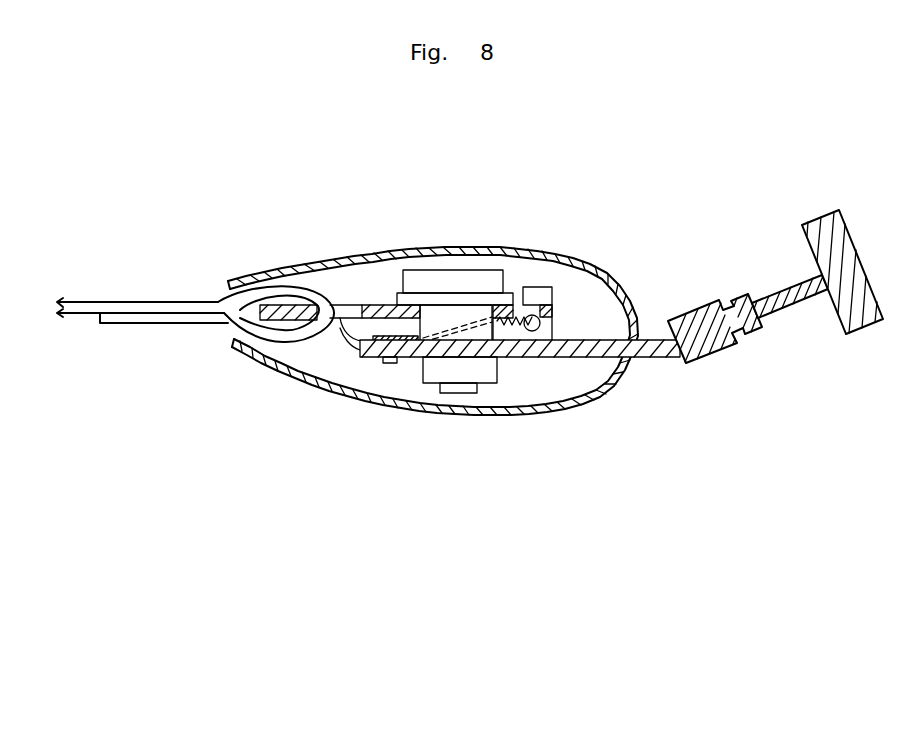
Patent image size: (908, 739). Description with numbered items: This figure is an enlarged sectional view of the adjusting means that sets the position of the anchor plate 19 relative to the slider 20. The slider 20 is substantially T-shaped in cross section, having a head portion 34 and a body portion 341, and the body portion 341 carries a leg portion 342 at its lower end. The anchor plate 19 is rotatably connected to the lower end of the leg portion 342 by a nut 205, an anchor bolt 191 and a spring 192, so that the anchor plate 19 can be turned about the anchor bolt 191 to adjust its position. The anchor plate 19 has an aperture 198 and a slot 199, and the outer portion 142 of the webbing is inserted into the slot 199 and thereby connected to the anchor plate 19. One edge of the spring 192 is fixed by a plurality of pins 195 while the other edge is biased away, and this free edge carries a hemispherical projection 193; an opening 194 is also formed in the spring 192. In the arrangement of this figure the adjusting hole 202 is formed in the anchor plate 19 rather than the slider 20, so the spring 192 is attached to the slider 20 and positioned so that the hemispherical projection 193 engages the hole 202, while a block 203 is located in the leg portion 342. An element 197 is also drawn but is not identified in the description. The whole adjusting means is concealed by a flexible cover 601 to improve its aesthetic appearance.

The outer portion of the webbing 142 is at (138, 302).
The flexible cover 601 is at (400, 408).
The aperture 198 is at (420, 295).
The slot 199 is at (345, 340).
The anchor bolt 191 is at (411, 282).
The anchor plate 19 is at (558, 298).
The central block 197 is at (465, 312).
The hole 202 is at (522, 288).
The block 203 is at (536, 288).
The hemispherical projection 193 is at (540, 335).
The spring 192 is at (545, 325).
The pins 195 is at (376, 341).
The leg portion 342 is at (520, 352).
The opening 194 is at (400, 361).
The nut 205 is at (490, 385).
The slider 20 is at (710, 290).
The body portion 341 is at (783, 300).
The head portion 34 is at (838, 212).